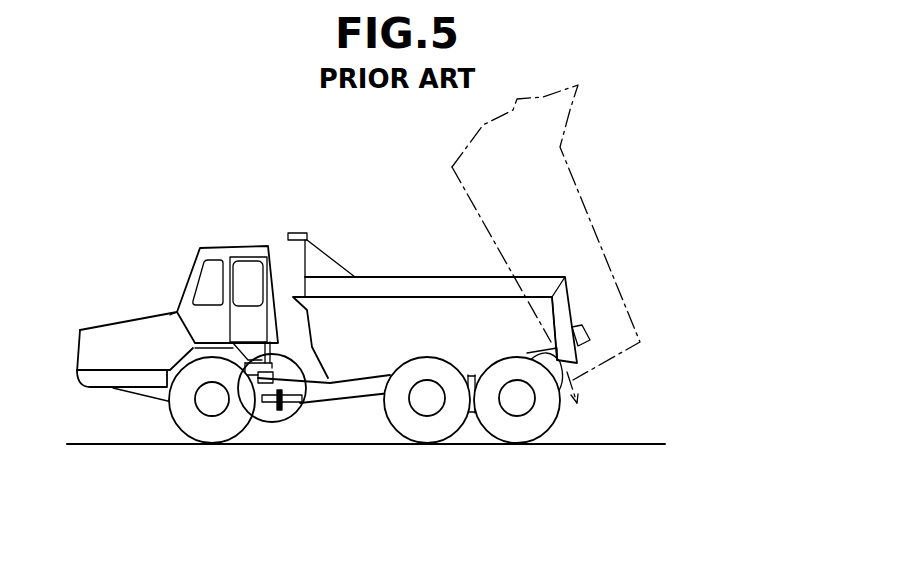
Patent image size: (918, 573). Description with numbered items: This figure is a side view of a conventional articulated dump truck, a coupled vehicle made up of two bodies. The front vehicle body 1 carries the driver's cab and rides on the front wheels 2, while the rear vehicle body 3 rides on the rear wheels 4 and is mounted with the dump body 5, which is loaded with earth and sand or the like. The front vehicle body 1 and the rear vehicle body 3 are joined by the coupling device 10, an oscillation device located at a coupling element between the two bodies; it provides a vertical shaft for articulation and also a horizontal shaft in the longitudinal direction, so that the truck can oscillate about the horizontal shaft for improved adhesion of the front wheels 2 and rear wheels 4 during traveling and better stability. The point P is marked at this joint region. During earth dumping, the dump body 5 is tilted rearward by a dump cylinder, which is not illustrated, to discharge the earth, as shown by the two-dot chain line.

The front vehicle body 1 is at (108, 330).
The front wheels 2 is at (198, 433).
The rear vehicle body 3 is at (360, 400).
The rear wheels 4 is at (428, 433).
The dump body 5 is at (390, 280).
The coupling device 10 is at (248, 420).
The pivot pin P is at (290, 420).